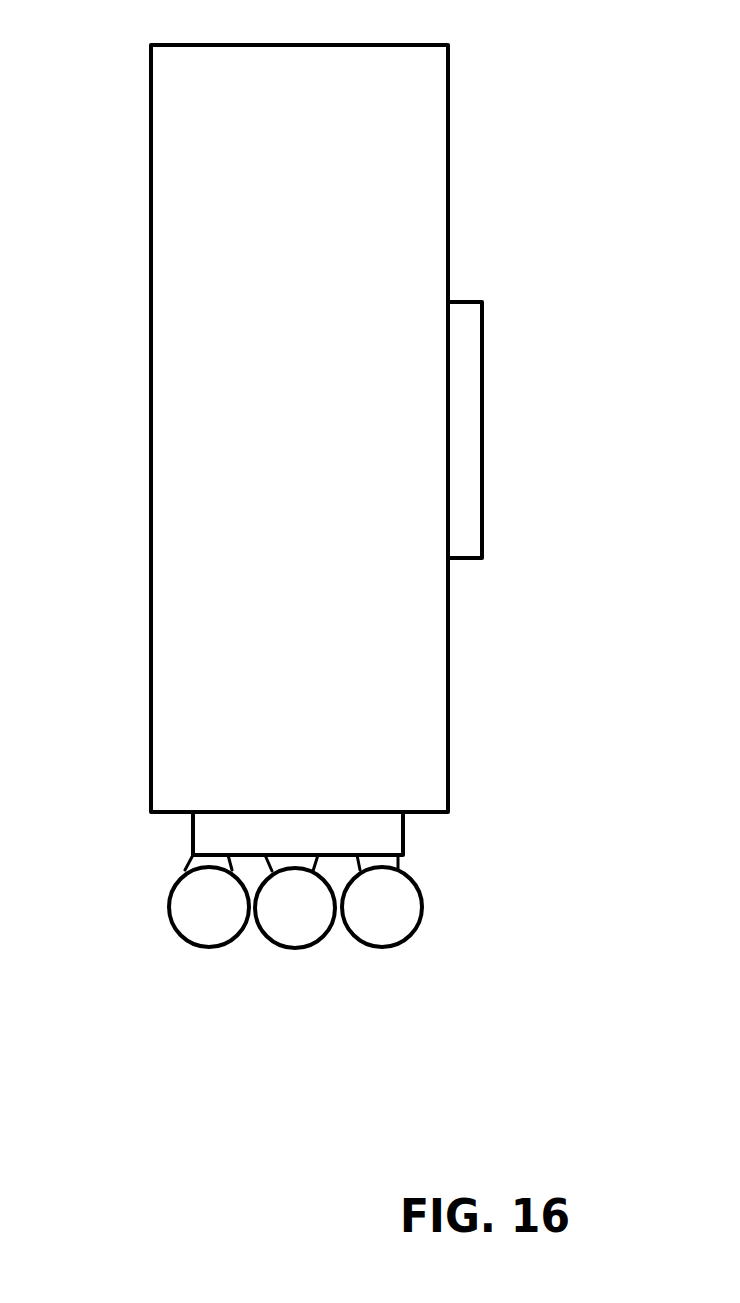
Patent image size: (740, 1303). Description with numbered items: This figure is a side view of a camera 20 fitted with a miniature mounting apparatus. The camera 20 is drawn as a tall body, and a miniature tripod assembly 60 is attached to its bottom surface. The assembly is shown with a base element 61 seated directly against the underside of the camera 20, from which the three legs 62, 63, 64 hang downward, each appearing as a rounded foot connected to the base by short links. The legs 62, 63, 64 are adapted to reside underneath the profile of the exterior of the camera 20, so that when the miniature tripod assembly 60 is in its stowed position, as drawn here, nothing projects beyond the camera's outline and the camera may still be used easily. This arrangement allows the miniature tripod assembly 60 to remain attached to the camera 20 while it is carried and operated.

The camera 20 is at (450, 210).
The miniature tripod assembly 60 is at (235, 944).
The interposer / substrate pad region 61 is at (405, 835).
The leg 62 is at (216, 947).
The leg 63 is at (311, 945).
The leg 64 is at (404, 945).